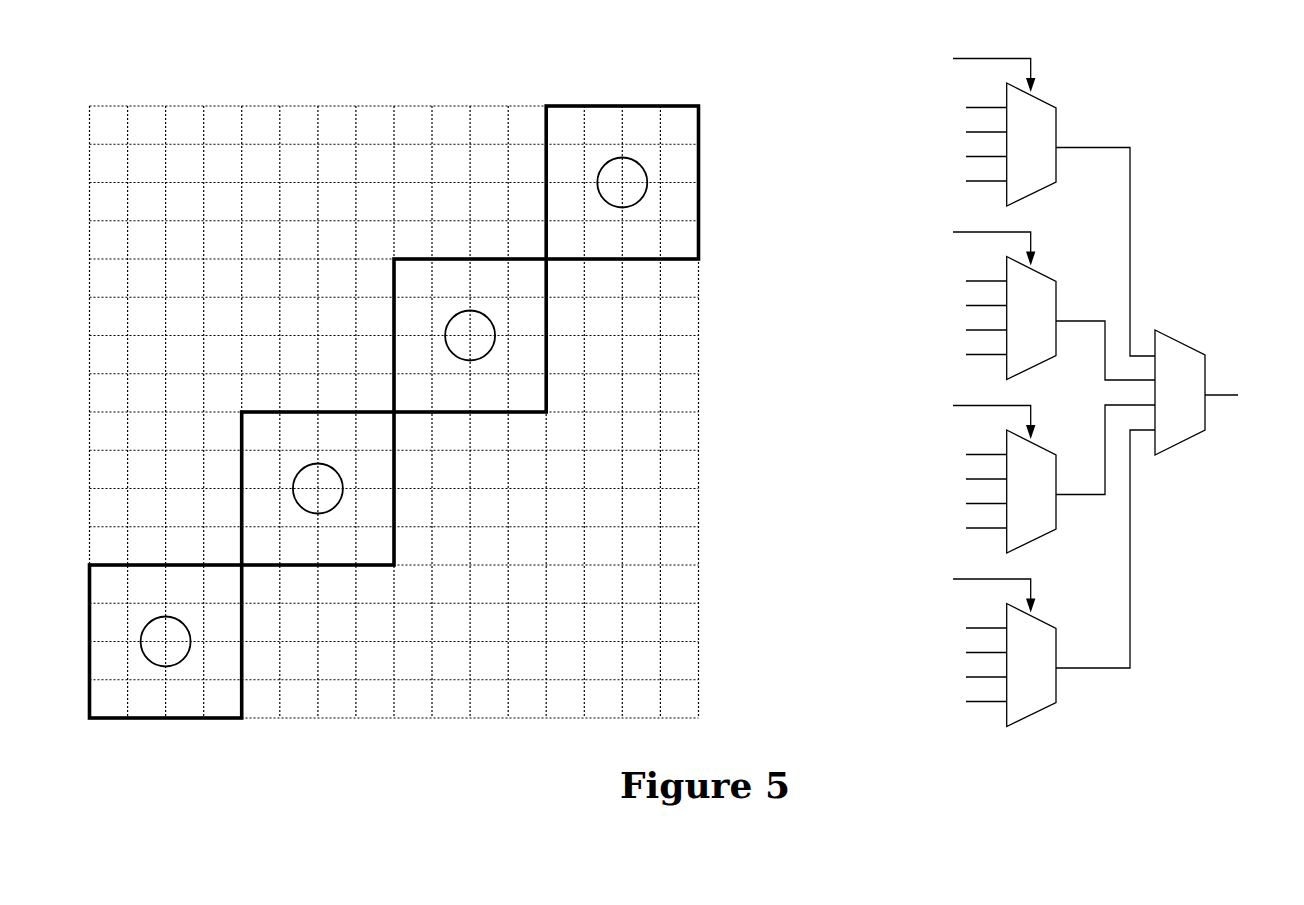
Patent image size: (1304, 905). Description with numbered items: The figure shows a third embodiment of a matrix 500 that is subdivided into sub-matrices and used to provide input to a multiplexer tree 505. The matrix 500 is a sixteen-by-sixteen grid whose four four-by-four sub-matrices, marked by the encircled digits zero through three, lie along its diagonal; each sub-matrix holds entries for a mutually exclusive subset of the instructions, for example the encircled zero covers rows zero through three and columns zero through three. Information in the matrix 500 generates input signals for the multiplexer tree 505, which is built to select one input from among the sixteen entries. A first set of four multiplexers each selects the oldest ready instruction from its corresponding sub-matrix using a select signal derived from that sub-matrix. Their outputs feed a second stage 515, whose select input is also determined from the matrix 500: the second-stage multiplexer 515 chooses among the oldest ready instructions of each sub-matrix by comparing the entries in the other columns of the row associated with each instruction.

The matrix 500 is at (195, 76).
The multiplexer tree 505 is at (1184, 97).
The second stage multiplexer 515 is at (1207, 420).